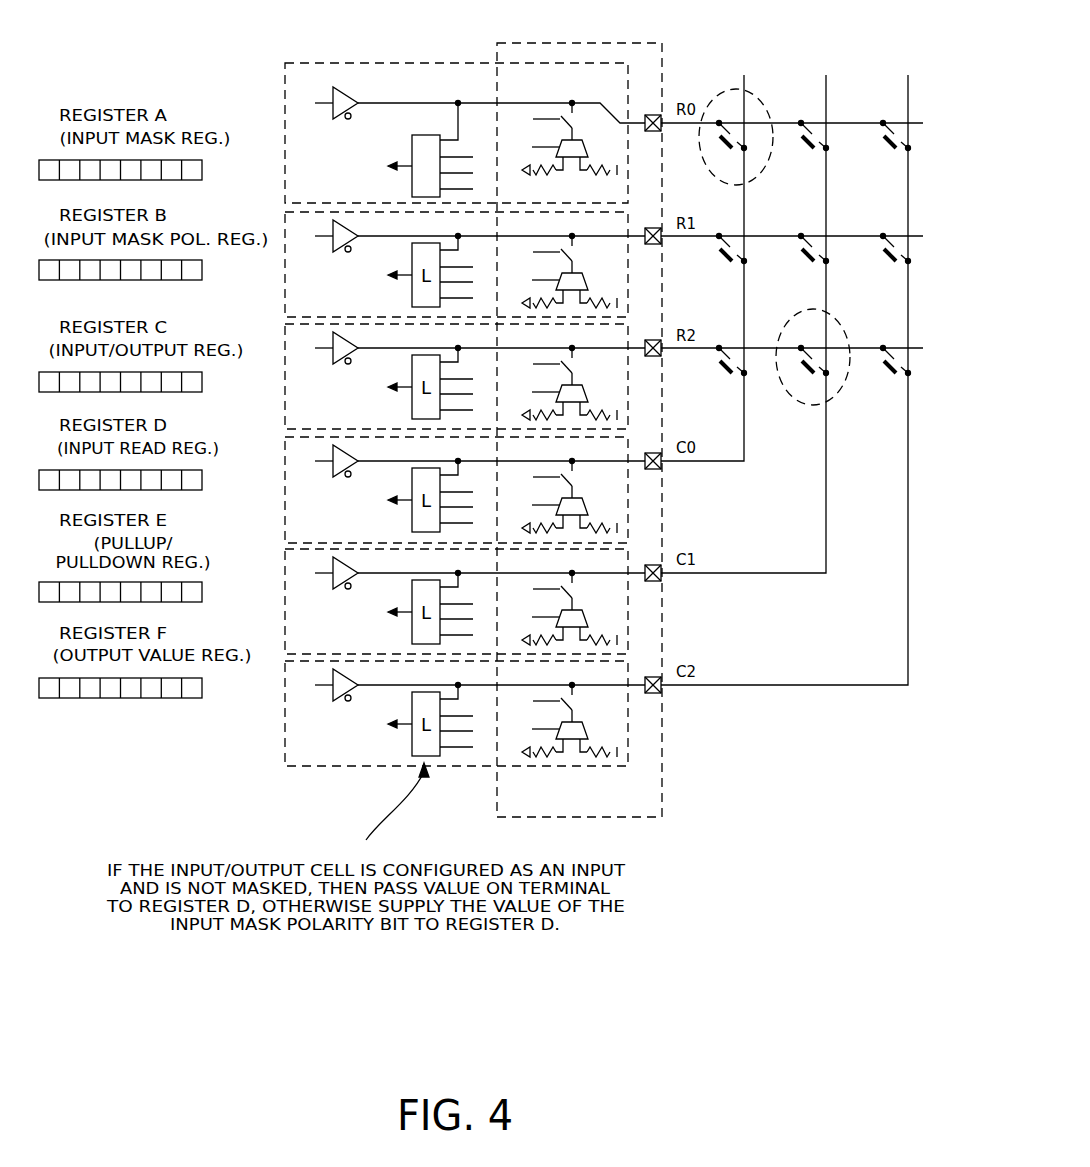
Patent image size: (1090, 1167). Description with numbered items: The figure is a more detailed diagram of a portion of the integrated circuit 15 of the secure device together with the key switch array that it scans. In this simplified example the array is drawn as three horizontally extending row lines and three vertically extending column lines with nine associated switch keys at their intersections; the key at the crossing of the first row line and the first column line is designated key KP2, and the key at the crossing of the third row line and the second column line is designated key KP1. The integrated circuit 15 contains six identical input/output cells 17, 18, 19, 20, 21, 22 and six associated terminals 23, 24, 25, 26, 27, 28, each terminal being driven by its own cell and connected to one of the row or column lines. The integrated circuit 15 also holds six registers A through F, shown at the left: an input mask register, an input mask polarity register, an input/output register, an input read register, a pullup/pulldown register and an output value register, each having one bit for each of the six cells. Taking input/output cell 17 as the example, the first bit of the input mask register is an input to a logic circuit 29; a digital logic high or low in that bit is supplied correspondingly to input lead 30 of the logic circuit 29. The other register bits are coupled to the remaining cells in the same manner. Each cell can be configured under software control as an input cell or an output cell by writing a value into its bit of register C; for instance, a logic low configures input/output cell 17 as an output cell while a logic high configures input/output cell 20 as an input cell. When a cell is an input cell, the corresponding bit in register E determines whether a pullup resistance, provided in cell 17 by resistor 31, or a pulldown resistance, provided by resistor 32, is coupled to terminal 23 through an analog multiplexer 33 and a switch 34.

The integrated circuit 15 is at (597, 43).
The input/output cell 17 is at (451, 133).
The input/output cell 18 is at (285, 274).
The input/output cell 19 is at (285, 386).
The input/output cell 20 is at (285, 491).
The input/output cell 21 is at (285, 602).
The input/output cell 22 is at (285, 722).
The terminal 23 is at (652, 131).
The terminal 24 is at (652, 245).
The terminal 25 is at (652, 357).
The terminal 26 is at (652, 470).
The terminal 27 is at (652, 582).
The terminal 28 is at (652, 694).
The logic circuit 29 is at (425, 135).
The input lead 30 is at (463, 157).
The resistor 31 is at (547, 177).
The resistor 32 is at (588, 175).
The analog multiplexer 33 is at (588, 146).
The switch 34 is at (578, 118).
The key KP1 is at (837, 318).
The key KP2 is at (753, 92).